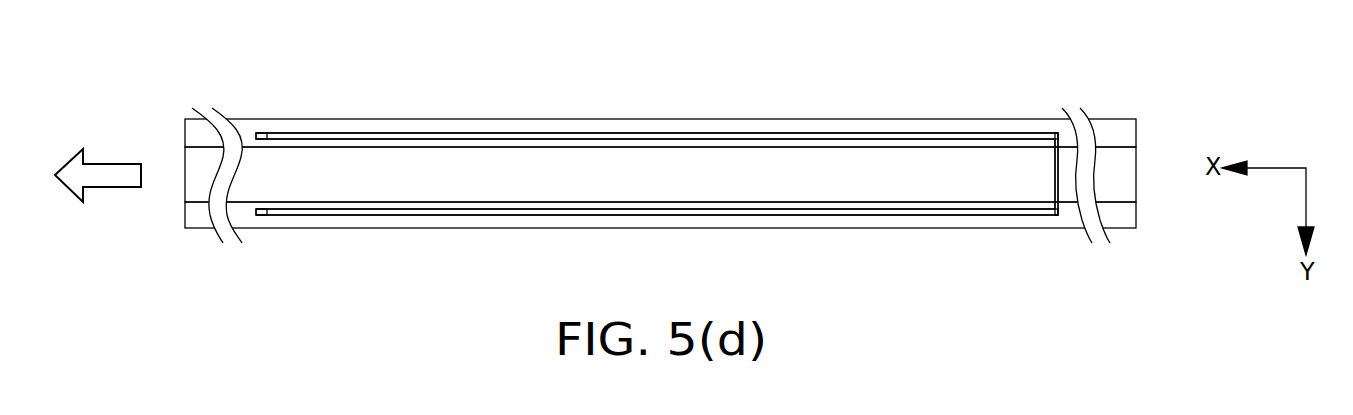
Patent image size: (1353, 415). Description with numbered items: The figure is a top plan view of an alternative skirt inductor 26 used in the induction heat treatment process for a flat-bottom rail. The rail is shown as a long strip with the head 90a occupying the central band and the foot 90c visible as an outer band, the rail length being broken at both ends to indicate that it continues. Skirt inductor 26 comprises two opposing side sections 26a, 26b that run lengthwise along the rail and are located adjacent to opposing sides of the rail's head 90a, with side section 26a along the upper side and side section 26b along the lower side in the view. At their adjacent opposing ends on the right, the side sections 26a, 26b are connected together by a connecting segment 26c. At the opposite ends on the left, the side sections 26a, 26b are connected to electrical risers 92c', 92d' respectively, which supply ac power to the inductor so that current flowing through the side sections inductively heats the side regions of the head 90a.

The skirt inductor 26 is at (657, 114).
The side section 26a is at (503, 137).
The side section 26b is at (733, 209).
The connecting segment 26c is at (1058, 171).
The foot 90c is at (1128, 132).
The head 90a is at (1127, 174).
The electrical riser 92c' is at (268, 105).
The electrical riser 92d' is at (269, 245).